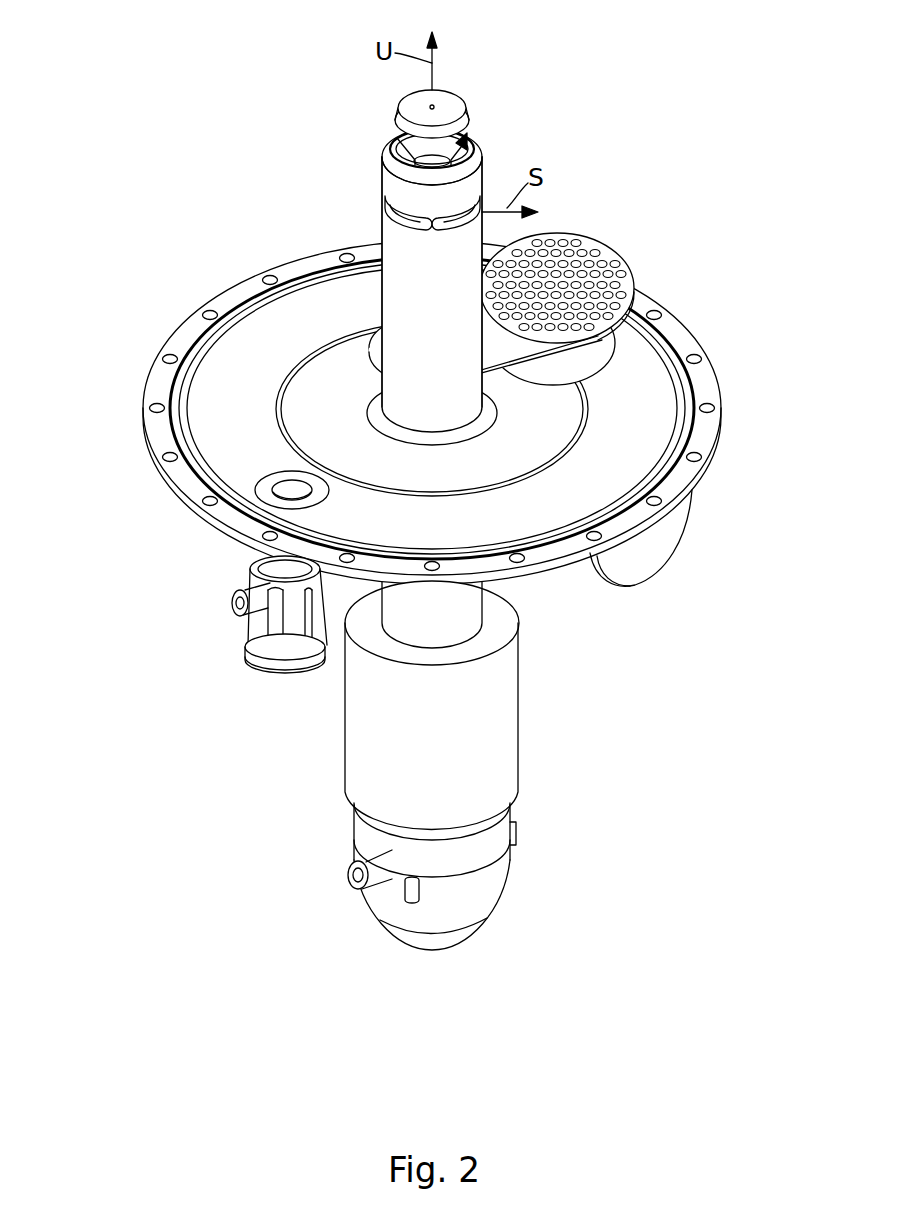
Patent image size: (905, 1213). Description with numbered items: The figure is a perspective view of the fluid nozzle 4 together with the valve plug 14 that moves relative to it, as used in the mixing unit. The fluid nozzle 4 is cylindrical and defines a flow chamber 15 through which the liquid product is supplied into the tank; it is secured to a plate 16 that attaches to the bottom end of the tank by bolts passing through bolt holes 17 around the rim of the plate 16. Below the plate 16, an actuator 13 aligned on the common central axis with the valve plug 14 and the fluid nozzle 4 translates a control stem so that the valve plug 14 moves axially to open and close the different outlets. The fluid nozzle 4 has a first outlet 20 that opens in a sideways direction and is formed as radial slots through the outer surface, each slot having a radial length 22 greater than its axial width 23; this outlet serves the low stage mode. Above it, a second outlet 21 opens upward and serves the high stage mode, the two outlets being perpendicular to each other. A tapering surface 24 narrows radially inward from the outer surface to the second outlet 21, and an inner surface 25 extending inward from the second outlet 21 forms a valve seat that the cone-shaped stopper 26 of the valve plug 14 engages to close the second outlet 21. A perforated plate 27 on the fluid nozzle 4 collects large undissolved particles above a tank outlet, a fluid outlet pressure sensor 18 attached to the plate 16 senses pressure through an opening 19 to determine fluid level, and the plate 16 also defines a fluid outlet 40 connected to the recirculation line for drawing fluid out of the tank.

The fluid nozzle 4 is at (392, 290).
The actuator 13 is at (368, 827).
The valve plug 14 is at (425, 95).
The flow chamber 15 is at (463, 135).
The plate 16 is at (240, 415).
The bolt holes 17 is at (207, 307).
The fluid outlet pressure sensor 18 is at (282, 607).
The opening 19 is at (290, 500).
The first outlet 20 is at (382, 197).
The second outlet 21 is at (407, 160).
The radial length 22 is at (390, 207).
The axial width 23 is at (420, 224).
The tapering surface 24 is at (473, 153).
The inner surface 25 is at (395, 135).
The cone-shaped stopper 26 is at (418, 145).
The perforated plate 27 is at (620, 282).
The fluid outlet 40 is at (617, 353).